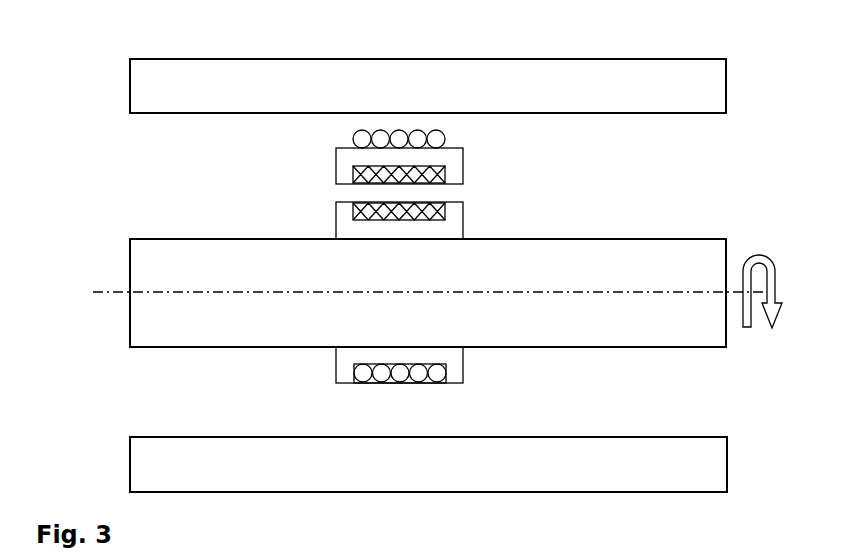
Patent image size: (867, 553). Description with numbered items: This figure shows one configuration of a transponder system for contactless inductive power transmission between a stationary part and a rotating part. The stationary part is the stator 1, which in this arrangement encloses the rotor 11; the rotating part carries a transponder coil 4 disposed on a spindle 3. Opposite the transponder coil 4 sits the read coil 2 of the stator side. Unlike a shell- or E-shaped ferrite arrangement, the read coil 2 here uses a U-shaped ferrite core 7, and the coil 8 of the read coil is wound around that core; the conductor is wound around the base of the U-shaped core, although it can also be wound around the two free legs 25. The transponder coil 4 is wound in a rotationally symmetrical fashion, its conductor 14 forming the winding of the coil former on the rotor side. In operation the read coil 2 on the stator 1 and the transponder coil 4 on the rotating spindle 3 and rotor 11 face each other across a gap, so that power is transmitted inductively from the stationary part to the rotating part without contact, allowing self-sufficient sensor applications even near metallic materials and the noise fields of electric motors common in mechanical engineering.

The stator 1 is at (688, 93).
The read coil 2 is at (442, 165).
The spindle 3 is at (437, 316).
The rotor 11 is at (652, 328).
The transponder coil 4 is at (432, 213).
The U-shaped ferrite core 7 is at (334, 150).
The coil 8 is at (397, 137).
The conductor 14 is at (358, 132).
The free legs 25 is at (443, 177).